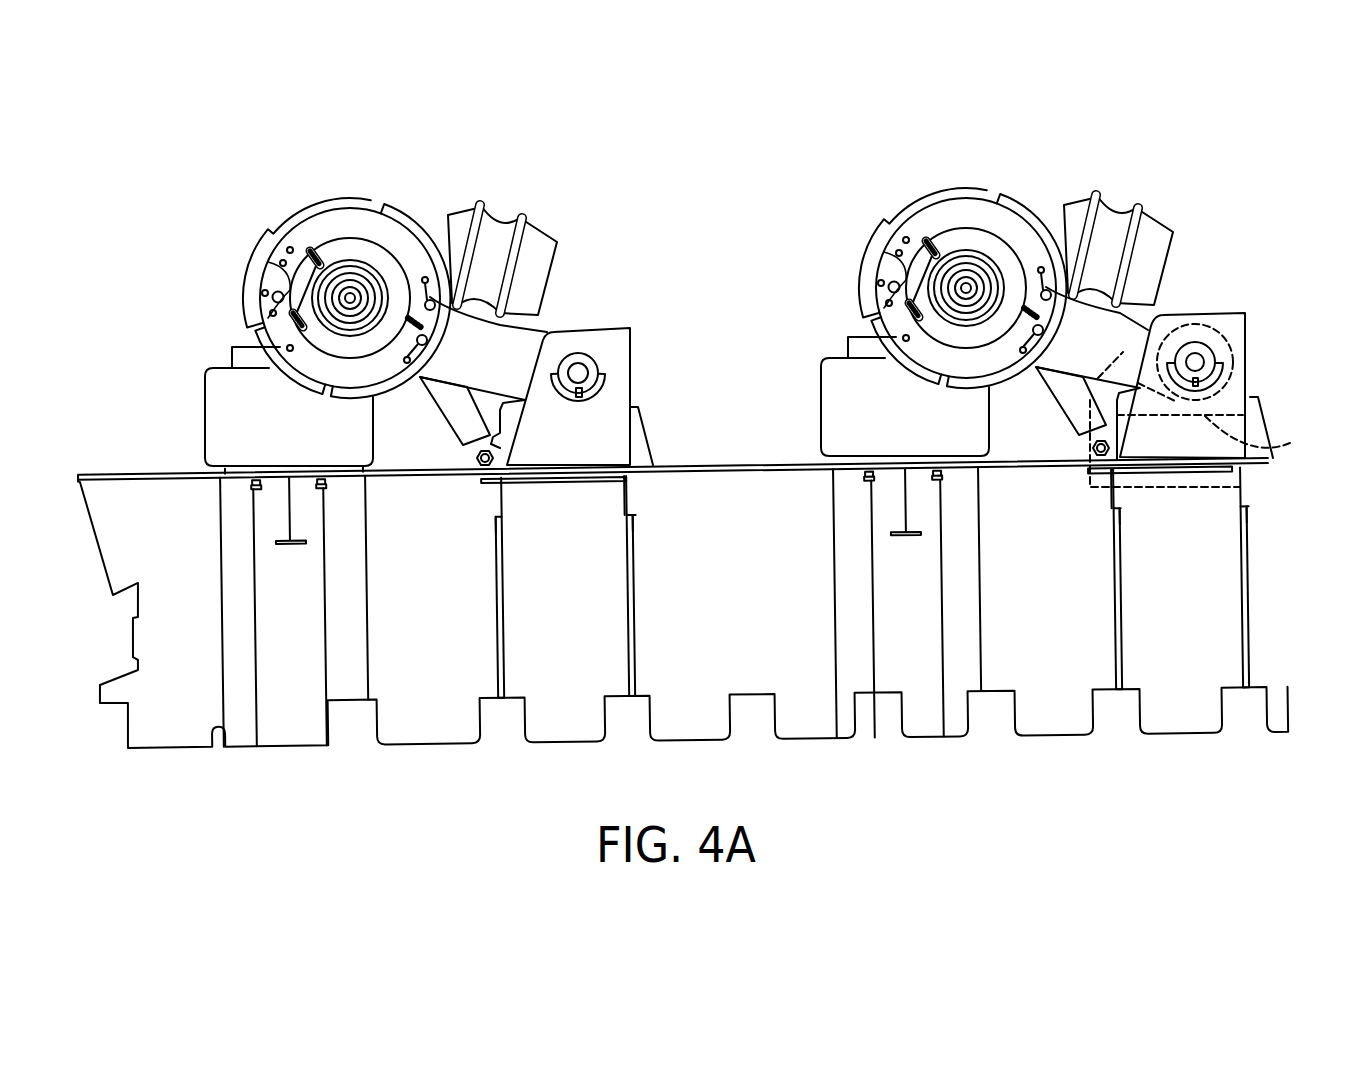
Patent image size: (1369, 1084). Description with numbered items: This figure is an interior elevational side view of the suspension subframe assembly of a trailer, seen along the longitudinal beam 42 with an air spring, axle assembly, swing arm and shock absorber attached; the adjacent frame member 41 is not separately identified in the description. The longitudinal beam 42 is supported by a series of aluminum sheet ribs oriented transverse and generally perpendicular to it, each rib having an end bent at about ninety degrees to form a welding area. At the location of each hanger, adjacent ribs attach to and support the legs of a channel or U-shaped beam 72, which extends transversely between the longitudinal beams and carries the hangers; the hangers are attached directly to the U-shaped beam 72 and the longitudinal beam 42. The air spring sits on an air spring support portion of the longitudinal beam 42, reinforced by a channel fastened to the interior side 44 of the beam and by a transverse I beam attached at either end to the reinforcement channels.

The frame rail 41 is at (784, 500).
The longitudinal beam 42 is at (738, 522).
The interior side of the longitudinal beam 44 is at (720, 631).
The U-shaped beam 72 is at (1245, 422).